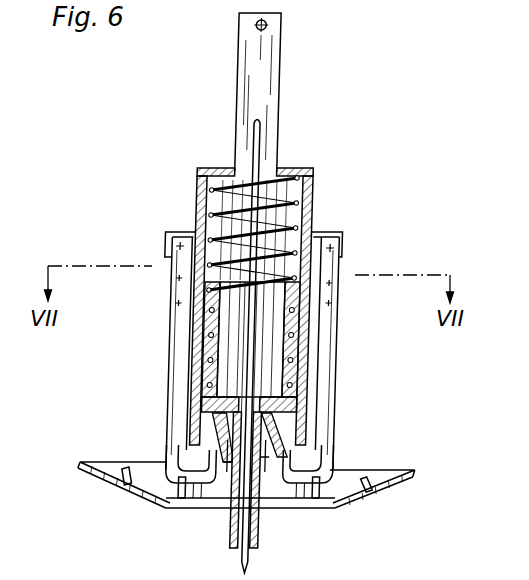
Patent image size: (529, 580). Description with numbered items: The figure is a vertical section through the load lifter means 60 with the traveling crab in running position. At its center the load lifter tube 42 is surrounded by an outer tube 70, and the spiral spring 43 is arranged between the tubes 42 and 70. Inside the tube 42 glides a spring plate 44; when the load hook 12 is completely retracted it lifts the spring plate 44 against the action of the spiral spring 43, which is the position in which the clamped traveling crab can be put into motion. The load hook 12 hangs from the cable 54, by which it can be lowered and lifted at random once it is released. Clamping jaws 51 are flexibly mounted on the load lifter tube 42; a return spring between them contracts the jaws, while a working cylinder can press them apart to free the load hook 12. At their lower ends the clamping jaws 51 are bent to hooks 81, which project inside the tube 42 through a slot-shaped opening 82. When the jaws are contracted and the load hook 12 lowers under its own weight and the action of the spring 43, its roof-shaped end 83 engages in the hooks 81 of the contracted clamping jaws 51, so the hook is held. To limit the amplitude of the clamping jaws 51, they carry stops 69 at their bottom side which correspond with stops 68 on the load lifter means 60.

The load hook 12 is at (231, 532).
The load lifter tube 42 is at (307, 218).
The spiral spring 43 is at (306, 197).
The spring plate 44 is at (272, 406).
The clamping jaws 51 is at (323, 370).
The cable 54 is at (258, 133).
The load lifter means 60 is at (402, 481).
The stops 68 is at (122, 468).
The stops 69 is at (180, 486).
The tube 70 is at (326, 284).
The hooks 81 is at (265, 473).
The slot-shaped opening 82 is at (276, 448).
The roof-shaped end 83 is at (300, 437).